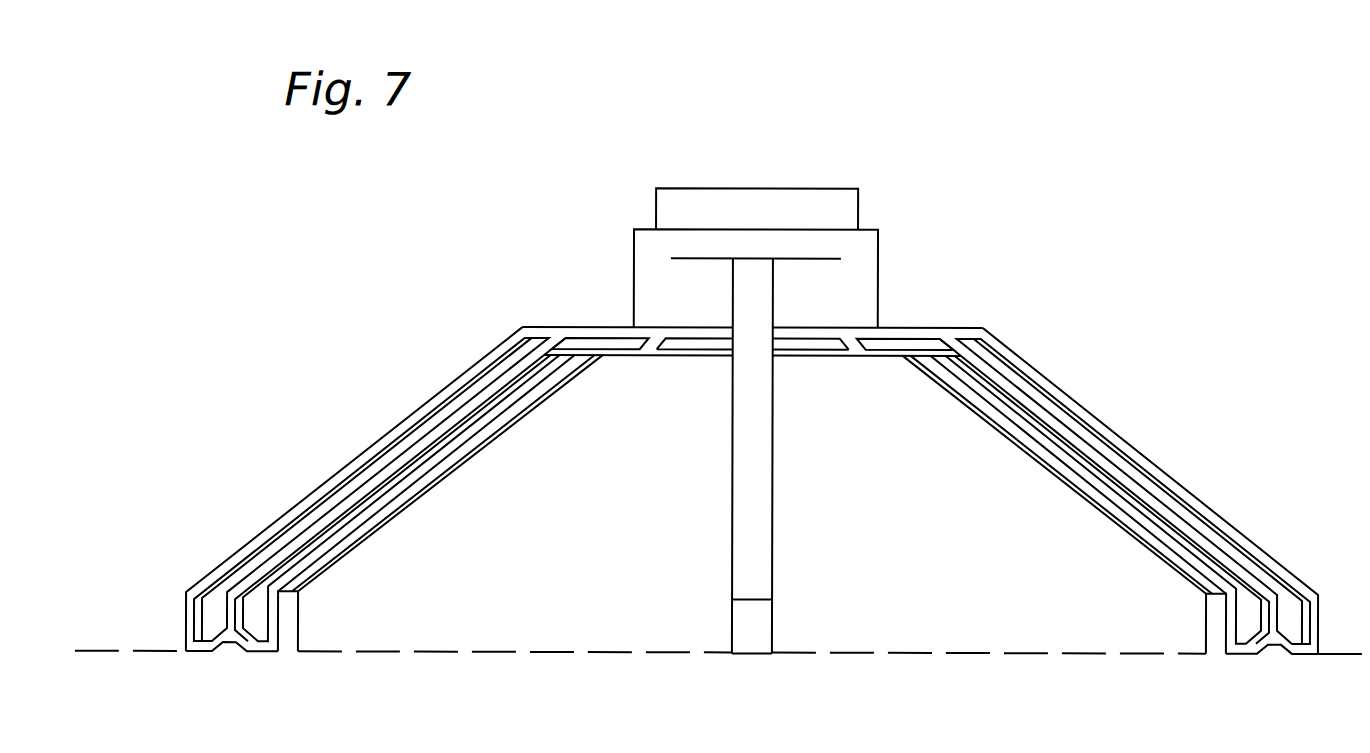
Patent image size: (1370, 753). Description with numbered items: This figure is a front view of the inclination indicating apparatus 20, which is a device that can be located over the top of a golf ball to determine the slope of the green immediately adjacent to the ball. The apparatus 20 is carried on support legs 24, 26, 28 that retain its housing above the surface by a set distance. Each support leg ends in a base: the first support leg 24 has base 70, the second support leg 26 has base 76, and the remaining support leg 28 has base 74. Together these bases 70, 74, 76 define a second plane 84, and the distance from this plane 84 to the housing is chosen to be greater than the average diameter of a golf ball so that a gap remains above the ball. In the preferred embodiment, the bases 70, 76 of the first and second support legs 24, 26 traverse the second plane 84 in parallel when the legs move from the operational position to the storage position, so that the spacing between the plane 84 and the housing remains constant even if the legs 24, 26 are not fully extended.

The inclination indicating apparatus 20 is at (1042, 248).
The first support leg 24 is at (412, 410).
The second support leg 26 is at (1148, 455).
The support leg 28 is at (748, 455).
The base of first support leg 70 is at (203, 655).
The base of support leg 74 is at (745, 654).
The base of second support leg 76 is at (1227, 655).
The second plane 84 is at (126, 648).